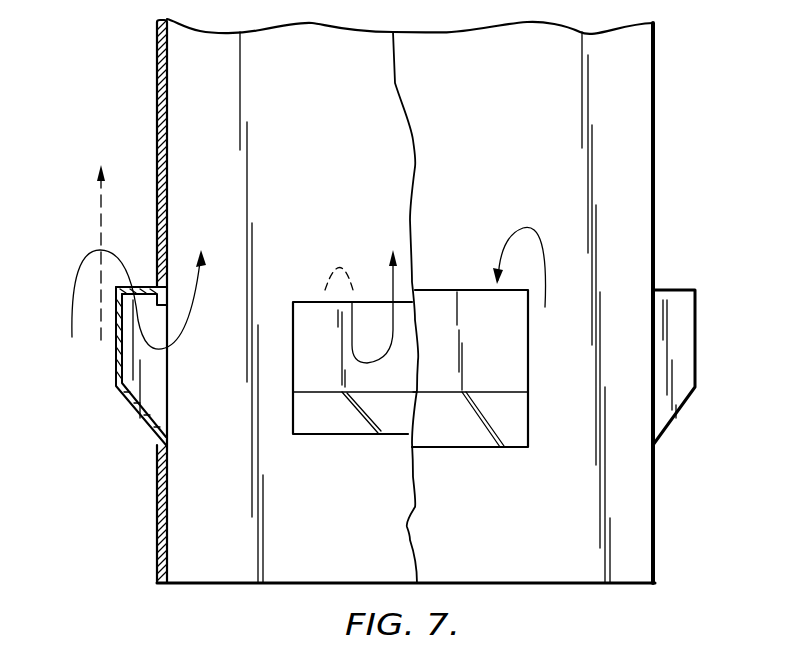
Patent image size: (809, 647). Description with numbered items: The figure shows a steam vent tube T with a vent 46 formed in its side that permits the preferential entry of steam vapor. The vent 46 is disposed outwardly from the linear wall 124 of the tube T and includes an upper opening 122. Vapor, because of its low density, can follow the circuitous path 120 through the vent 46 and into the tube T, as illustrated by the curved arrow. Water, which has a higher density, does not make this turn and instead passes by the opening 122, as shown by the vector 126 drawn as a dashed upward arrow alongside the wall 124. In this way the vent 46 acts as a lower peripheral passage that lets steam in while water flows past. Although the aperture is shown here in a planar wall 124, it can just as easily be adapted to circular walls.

The vent tube T is at (147, 42).
The vent 46 is at (115, 371).
The path 120 is at (70, 333).
The upper opening 122 is at (142, 287).
The linear wall 124 is at (158, 535).
The vector 126 is at (100, 240).